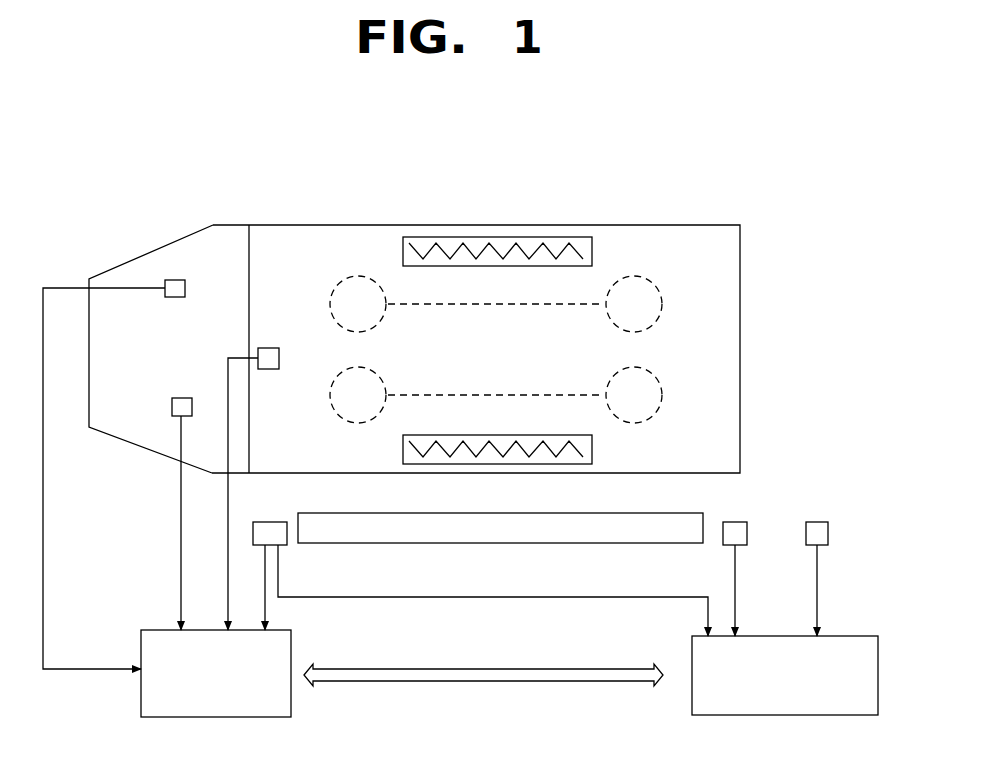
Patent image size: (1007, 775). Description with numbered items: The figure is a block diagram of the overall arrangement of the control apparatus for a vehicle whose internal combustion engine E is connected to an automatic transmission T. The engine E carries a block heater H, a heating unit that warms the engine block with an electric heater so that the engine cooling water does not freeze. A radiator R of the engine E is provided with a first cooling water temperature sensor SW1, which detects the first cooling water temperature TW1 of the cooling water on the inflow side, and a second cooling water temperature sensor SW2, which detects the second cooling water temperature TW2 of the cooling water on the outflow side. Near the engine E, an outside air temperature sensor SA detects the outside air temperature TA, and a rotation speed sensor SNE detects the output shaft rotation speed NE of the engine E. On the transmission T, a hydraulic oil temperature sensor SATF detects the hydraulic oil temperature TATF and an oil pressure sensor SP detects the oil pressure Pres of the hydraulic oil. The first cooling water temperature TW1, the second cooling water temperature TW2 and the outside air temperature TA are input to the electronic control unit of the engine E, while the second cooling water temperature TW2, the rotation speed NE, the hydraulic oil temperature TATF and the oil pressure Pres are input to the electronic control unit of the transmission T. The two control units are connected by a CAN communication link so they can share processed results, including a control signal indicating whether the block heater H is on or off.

The automatic transmission T is at (223, 225).
The internal combustion engine E is at (679, 225).
The block heater H is at (463, 243).
The oil pressure sensor SP is at (176, 275).
The rotation speed sensor SNE is at (278, 343).
The hydraulic oil temperature sensor SATF is at (181, 392).
The second cooling water temperature sensor SW2 is at (270, 519).
The first cooling water temperature sensor SW1 is at (735, 519).
The outside air temperature sensor SA is at (817, 519).
The radiator R is at (417, 543).
The oil pressure Pres is at (101, 495).
The output shaft rotation speed NE is at (224, 494).
The hydraulic oil temperature TATF is at (152, 523).
The second cooling water temperature TW2 is at (486, 590).
The first cooling water temperature TW1 is at (761, 590).
The outside air temperature TA is at (834, 590).